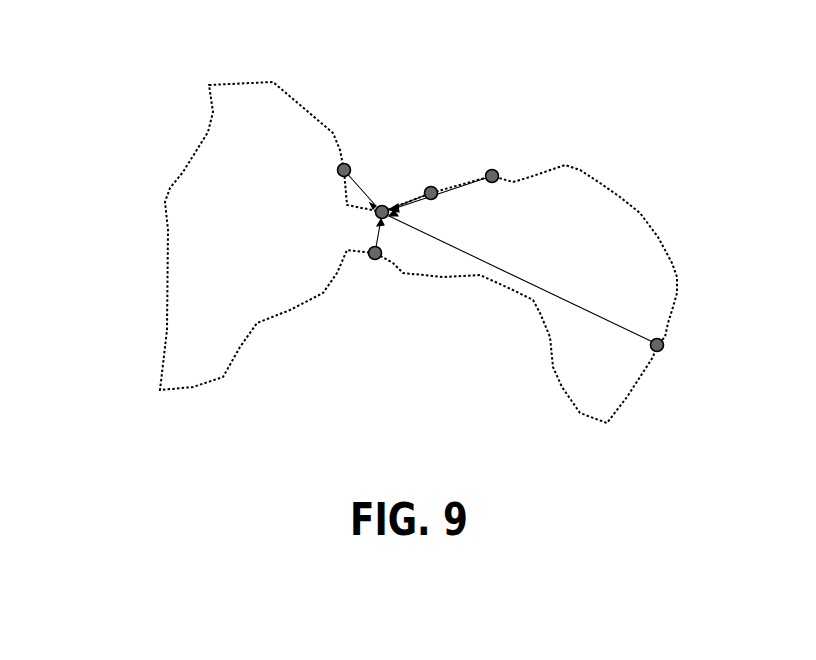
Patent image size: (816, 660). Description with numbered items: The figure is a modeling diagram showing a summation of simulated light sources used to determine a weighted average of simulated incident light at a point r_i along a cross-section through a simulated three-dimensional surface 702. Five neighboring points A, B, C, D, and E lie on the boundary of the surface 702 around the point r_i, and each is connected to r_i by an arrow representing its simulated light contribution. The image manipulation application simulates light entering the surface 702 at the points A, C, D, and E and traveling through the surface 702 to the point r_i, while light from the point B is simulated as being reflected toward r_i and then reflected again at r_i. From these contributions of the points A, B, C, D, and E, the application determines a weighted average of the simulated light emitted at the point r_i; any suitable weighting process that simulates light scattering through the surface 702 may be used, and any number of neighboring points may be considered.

The simulated three-dimensional surface 702 is at (375, 242).
The point A is at (427, 185).
The point B is at (349, 160).
The point C is at (496, 167).
The point D is at (375, 275).
The point E is at (671, 357).